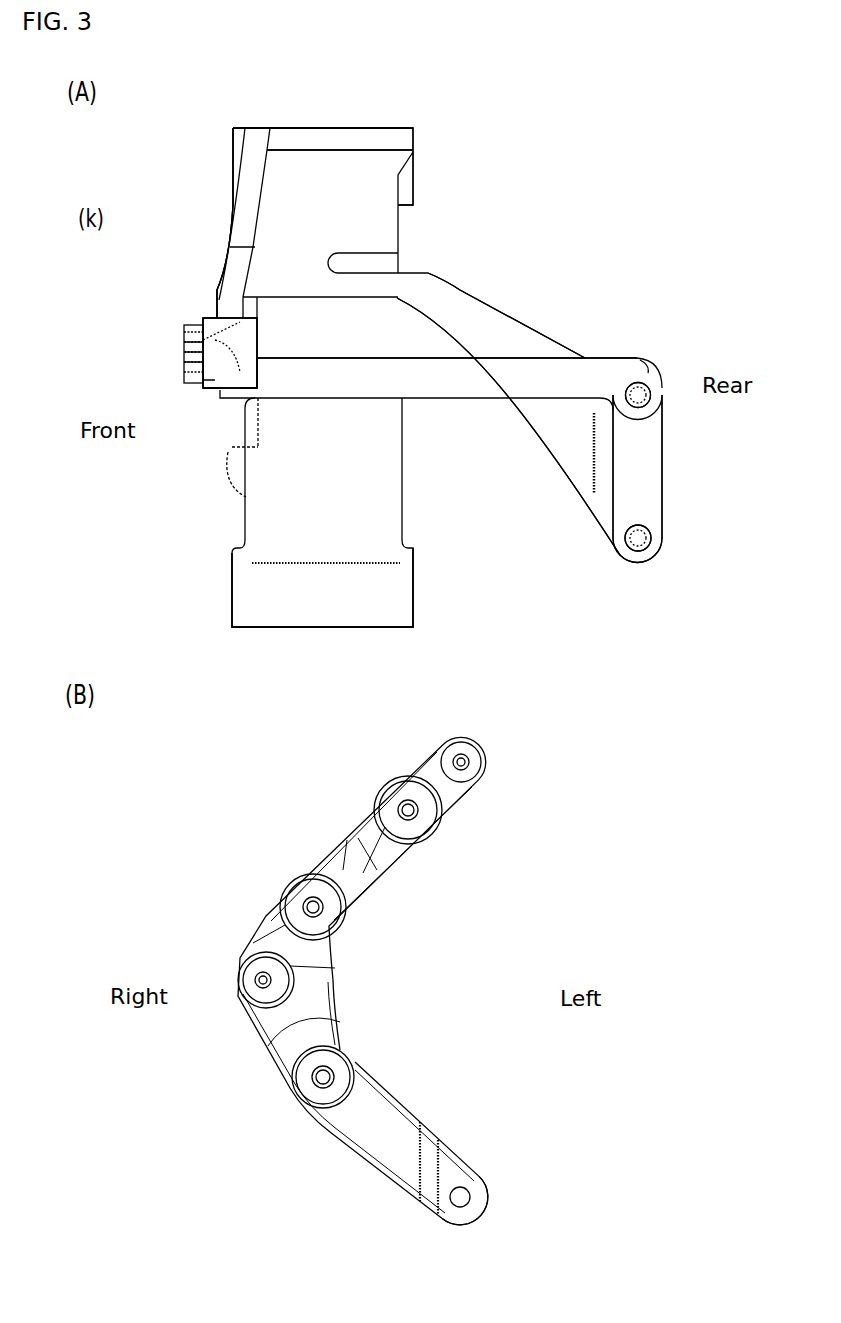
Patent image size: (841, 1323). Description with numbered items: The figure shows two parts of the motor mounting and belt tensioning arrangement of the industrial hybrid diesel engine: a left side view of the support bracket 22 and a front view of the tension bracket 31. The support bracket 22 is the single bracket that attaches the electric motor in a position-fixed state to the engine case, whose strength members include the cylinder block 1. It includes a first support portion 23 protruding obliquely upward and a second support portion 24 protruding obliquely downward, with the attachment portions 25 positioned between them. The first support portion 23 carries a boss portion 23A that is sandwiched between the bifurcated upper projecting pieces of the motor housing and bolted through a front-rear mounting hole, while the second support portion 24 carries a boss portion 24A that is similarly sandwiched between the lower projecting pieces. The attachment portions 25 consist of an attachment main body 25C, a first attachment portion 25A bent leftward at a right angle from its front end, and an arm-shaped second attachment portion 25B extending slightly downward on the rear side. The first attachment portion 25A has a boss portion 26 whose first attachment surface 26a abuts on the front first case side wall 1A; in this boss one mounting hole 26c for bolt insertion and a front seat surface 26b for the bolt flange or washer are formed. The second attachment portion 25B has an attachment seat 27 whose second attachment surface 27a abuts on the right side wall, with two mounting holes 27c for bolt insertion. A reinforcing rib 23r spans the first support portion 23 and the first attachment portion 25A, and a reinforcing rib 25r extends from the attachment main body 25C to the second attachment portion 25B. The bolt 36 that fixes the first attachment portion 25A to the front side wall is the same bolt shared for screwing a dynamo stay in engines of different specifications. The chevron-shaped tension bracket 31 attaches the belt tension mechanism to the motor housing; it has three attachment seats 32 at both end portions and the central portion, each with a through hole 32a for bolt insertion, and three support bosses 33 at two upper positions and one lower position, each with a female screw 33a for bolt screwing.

The cylinder block 1 is at (185, 333).
The first case side wall 1A is at (246, 497).
The support bracket 22 is at (489, 243).
The first support portion 23 is at (300, 193).
The boss portion 23A is at (328, 145).
The reinforcing rib 23r is at (240, 212).
The second support portion 24 is at (243, 540).
The boss portion 24A is at (390, 605).
The attachment portions 25 is at (302, 345).
The first attachment portion 25A is at (195, 415).
The second attachment portion 25B is at (523, 327).
The attachment main body 25C is at (367, 387).
The reinforcing rib 25r is at (560, 440).
The boss portion 26 is at (217, 405).
The first attachment surface 26a is at (258, 378).
The front seat surface 26b is at (184, 337).
The mounting hole 26c is at (184, 357).
The attachment seat 27 is at (662, 383).
The second attachment surface 27a is at (645, 476).
The mounting holes 27c is at (655, 390).
The tension bracket 31 is at (264, 910).
The attachment seats 32 is at (488, 763).
The through hole 32a is at (452, 760).
The support bosses 33 is at (310, 880).
The female screw 33a is at (420, 814).
The bolt 36 is at (185, 376).